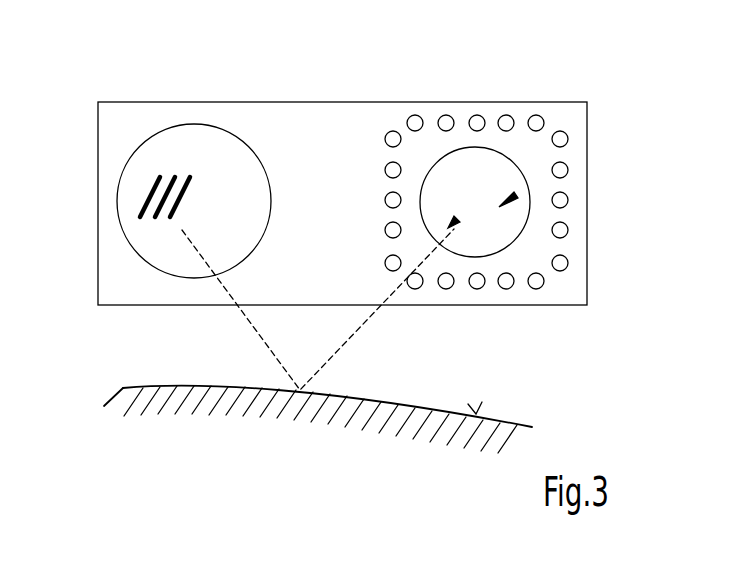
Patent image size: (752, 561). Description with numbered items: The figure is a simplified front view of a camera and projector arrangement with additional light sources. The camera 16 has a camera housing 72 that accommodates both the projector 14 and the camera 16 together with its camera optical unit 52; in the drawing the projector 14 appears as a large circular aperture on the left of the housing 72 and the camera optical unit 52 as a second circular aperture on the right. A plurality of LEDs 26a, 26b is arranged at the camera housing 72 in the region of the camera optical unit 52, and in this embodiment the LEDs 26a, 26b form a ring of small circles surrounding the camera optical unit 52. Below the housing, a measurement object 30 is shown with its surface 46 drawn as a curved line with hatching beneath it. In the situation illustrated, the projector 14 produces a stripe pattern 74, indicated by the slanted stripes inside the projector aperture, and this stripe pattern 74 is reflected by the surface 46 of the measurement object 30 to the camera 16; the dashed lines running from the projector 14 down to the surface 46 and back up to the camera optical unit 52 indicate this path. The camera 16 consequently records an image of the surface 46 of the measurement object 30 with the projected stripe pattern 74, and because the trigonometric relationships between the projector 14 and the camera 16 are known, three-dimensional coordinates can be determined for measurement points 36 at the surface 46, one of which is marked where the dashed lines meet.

The projector 14 is at (190, 124).
The camera housing 72 is at (315, 101).
The camera optical unit 52 is at (482, 148).
The LED 26a is at (568, 145).
The LED 26b is at (569, 264).
The camera 16 is at (510, 203).
The stripe pattern 74 is at (150, 190).
The measurement points 36 is at (300, 389).
The surface 46 is at (477, 416).
The measurement object 30 is at (402, 418).